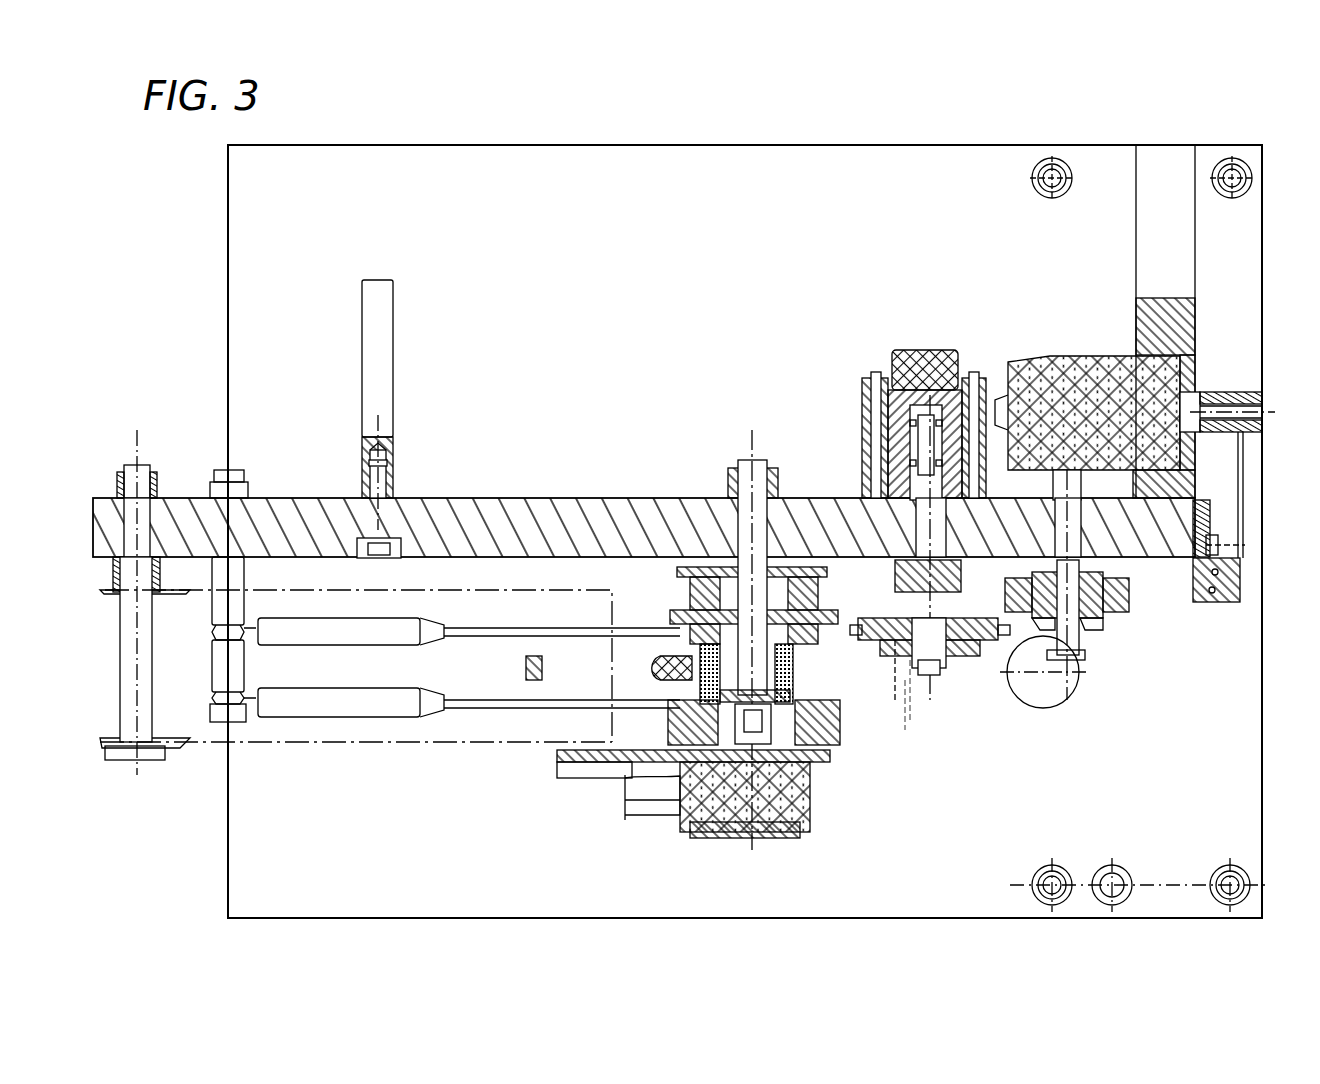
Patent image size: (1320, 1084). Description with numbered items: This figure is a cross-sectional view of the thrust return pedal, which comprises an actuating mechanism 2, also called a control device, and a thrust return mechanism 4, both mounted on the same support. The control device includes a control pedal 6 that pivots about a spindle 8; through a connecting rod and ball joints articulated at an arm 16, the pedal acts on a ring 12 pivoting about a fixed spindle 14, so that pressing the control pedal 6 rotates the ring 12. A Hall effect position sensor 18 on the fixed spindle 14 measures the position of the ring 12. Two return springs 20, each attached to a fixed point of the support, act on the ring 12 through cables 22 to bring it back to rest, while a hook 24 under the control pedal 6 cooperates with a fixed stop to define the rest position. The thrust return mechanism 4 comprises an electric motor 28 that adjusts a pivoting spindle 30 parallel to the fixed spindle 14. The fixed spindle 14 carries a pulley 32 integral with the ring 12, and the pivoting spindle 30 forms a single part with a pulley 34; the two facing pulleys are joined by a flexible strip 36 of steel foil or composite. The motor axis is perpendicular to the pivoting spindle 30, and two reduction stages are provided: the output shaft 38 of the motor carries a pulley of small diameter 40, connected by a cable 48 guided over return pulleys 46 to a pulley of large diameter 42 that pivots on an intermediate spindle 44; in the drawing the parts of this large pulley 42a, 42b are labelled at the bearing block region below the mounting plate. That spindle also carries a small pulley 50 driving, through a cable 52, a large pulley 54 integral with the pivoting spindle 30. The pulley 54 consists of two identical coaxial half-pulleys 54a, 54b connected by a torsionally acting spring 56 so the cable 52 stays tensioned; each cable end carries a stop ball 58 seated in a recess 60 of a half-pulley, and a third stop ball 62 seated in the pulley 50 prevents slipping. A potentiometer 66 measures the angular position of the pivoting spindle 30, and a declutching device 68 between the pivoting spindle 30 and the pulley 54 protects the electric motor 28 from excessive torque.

The actuating mechanism 2 is at (450, 778).
The thrust return mechanism 4 is at (978, 790).
The control pedal 6 is at (178, 754).
The spindle 8 is at (122, 656).
The ring 12 is at (802, 712).
The fixed spindle 14 is at (746, 475).
The arm 16 is at (658, 676).
The Hall effect position sensor 18 is at (812, 818).
The return springs 20 is at (313, 640).
The cables 22 is at (494, 636).
The hook 24 is at (542, 672).
The electric motor 28 is at (1052, 366).
The pivoting spindle 30 is at (940, 712).
The pulley 32 is at (680, 610).
The pulley 34 is at (885, 592).
The flexible strip 36 is at (765, 627).
The output shaft 38 is at (1218, 405).
The pulley of small diameter 40 is at (1244, 402).
The pulley of large diameter 42 is at (1075, 585).
The bearing block lower part 42a is at (1112, 636).
The bearing block upper part 42b is at (1128, 580).
The intermediate spindle 44 is at (1058, 512).
The return pulleys 46 is at (1215, 556).
The cable 48 is at (1165, 610).
The pulley of small diameter 50 is at (1088, 660).
The cable 52 is at (1045, 672).
The pulley of large diameter 54 is at (972, 592).
The half-pulley 54a is at (865, 640).
The half-pulley 54b is at (895, 700).
The spring 56 is at (930, 622).
The stop ball 58 is at (885, 618).
The recess 60 is at (986, 652).
The third stop ball 62 is at (1085, 638).
The potentiometer 66 is at (920, 352).
The declutching device 68 is at (883, 675).